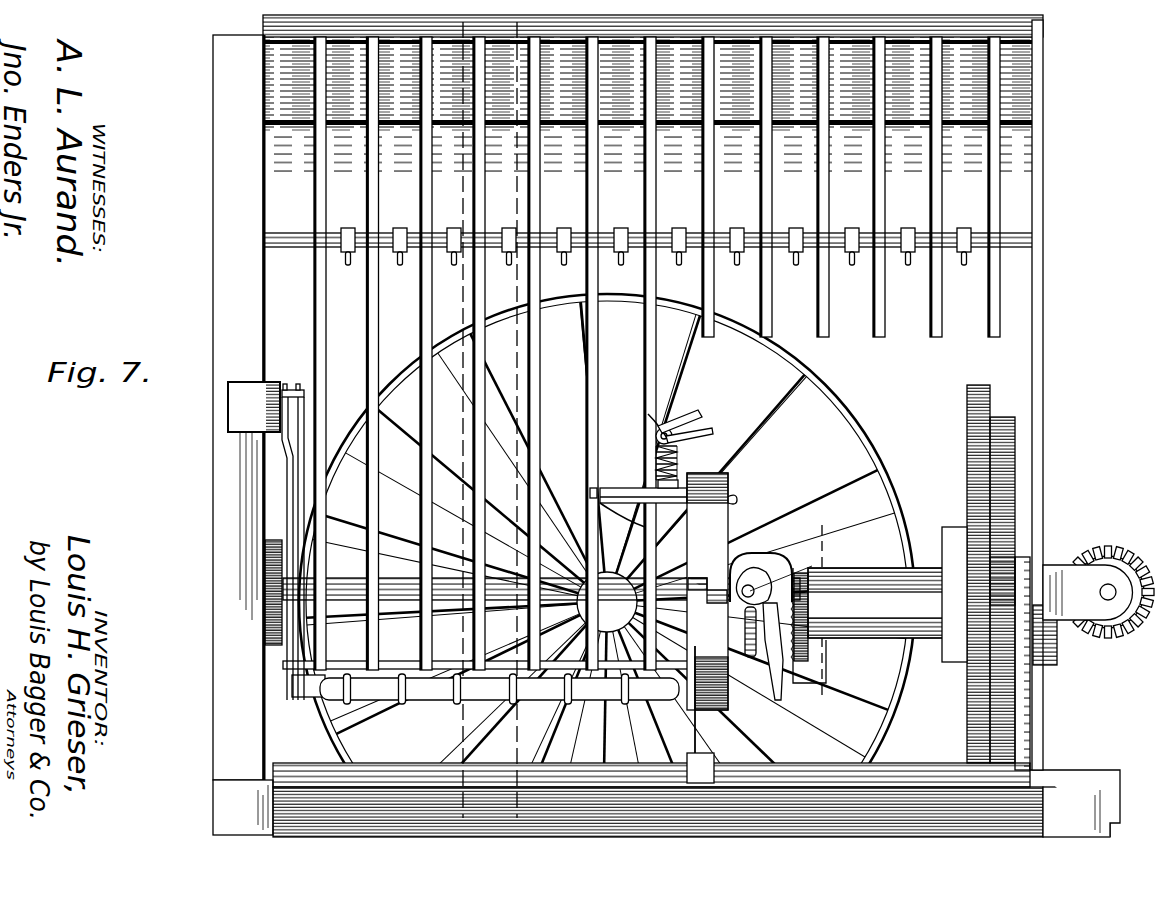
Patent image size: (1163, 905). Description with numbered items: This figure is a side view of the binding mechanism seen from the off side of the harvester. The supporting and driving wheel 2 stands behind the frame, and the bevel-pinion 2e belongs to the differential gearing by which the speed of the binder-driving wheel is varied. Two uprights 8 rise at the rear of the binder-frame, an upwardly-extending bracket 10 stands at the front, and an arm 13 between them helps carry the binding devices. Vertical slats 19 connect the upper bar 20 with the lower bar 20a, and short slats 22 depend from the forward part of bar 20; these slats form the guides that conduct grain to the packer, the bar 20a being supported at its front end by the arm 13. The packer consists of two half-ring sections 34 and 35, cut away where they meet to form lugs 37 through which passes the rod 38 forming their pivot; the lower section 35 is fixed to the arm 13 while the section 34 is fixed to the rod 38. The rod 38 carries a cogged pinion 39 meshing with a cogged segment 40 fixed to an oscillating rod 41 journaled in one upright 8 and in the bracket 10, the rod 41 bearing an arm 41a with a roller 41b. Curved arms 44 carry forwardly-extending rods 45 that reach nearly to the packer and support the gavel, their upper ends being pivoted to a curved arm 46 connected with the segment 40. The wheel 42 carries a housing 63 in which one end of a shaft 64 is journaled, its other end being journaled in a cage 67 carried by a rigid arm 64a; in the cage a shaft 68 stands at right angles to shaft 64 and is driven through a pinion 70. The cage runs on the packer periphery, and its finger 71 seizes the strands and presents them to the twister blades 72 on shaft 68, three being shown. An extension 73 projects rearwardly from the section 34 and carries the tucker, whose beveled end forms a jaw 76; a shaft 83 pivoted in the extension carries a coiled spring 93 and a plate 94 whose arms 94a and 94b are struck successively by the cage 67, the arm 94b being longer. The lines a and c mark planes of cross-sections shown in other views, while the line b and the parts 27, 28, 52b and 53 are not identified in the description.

The supporting and driving wheel 2 is at (607, 599).
The bevel-pinion 2e is at (1098, 584).
The uprights or standards 8 is at (238, 407).
The bracket 10 is at (1046, 700).
The arm 13 is at (704, 753).
The vertical slats 19 is at (430, 200).
The bar 20 is at (268, 50).
The lower bar 20a is at (383, 664).
The short slats 22 is at (762, 223).
The horizontal rod with clips 27 is at (586, 240).
The right frame post 28 is at (1045, 269).
The packer section 34 is at (707, 591).
The lower packer section 35 is at (711, 695).
The lugs 37 is at (700, 582).
The rod 38 is at (386, 585).
The cogged pinion 39 is at (264, 579).
The cogged segment 40 is at (279, 736).
The oscillating rod 41 is at (415, 765).
The arm 41a is at (1014, 678).
The roller 41b is at (997, 566).
The wheel 42 is at (965, 574).
The curved arms 44 is at (300, 500).
The rods 45 is at (446, 698).
The curved arm 46 is at (290, 465).
The bearing block 52b is at (1071, 635).
The upright 53 is at (1005, 577).
The housing 63 is at (954, 594).
The shaft 64 is at (876, 636).
The rigid arm 64a is at (876, 603).
The cage 67 is at (772, 558).
The shaft 68 is at (750, 660).
The bevel pinion 70 is at (813, 625).
The finger 71 is at (779, 672).
The curved blades 72 is at (814, 565).
The extension 73 is at (617, 492).
The jaw 76 is at (736, 499).
The shaft 83 is at (673, 442).
The coiled spring 93 is at (678, 468).
The plate 94 is at (657, 418).
The arm 94a is at (701, 430).
The arm 94b is at (685, 409).
The section line a is at (460, 418).
The section line b is at (518, 422).
The section line c is at (823, 611).